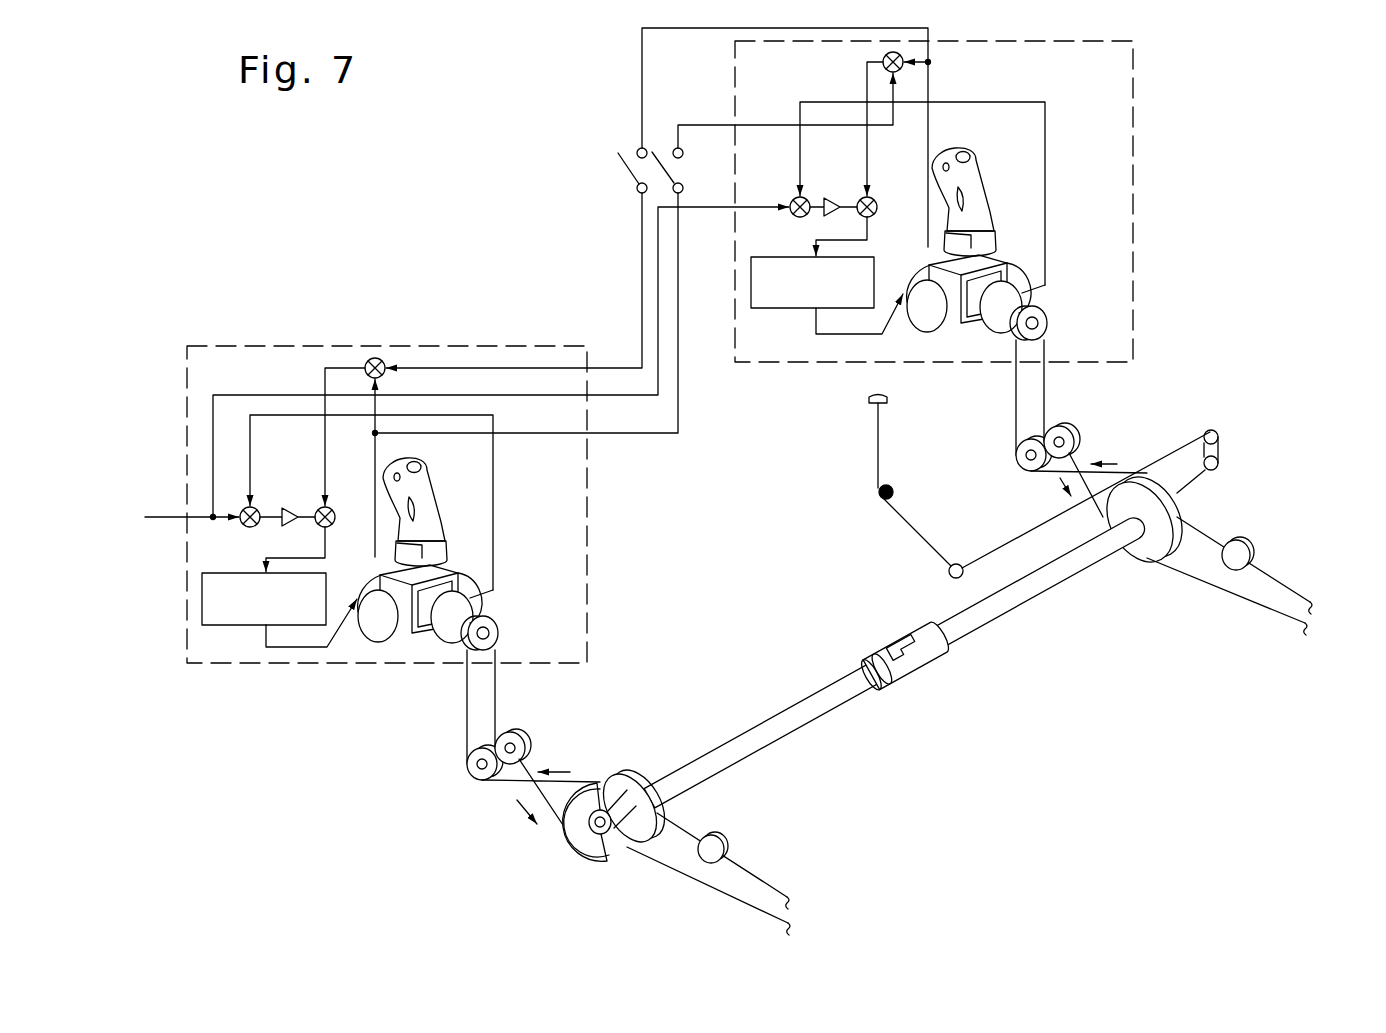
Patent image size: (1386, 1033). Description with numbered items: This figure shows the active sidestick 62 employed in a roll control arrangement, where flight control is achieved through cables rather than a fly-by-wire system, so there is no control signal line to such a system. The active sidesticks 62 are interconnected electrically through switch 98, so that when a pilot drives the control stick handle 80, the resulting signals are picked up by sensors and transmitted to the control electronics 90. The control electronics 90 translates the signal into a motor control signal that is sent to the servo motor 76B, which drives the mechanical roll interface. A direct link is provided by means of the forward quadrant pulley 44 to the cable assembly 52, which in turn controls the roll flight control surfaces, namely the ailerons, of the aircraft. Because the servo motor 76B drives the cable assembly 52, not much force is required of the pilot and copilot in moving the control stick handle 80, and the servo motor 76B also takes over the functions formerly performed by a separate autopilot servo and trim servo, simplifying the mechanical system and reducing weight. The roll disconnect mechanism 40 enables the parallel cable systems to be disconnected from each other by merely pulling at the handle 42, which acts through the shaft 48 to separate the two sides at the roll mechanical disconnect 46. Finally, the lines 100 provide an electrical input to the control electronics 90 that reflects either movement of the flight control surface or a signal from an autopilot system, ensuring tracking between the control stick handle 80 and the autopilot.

The switch 98 is at (618, 143).
The lines 100 is at (189, 493).
The control stick handle 80 is at (437, 497).
The active sidestick 62 is at (474, 560).
The servo motor 76B is at (363, 574).
The control electronics 90 is at (240, 628).
The handle 42 is at (865, 408).
The roll disconnect mechanism 40 is at (1199, 488).
The shaft 48 is at (1116, 559).
The roll mechanical disconnect 46 is at (930, 667).
The forward quadrant pulley 44 is at (575, 848).
The cable assembly 52 is at (683, 878).